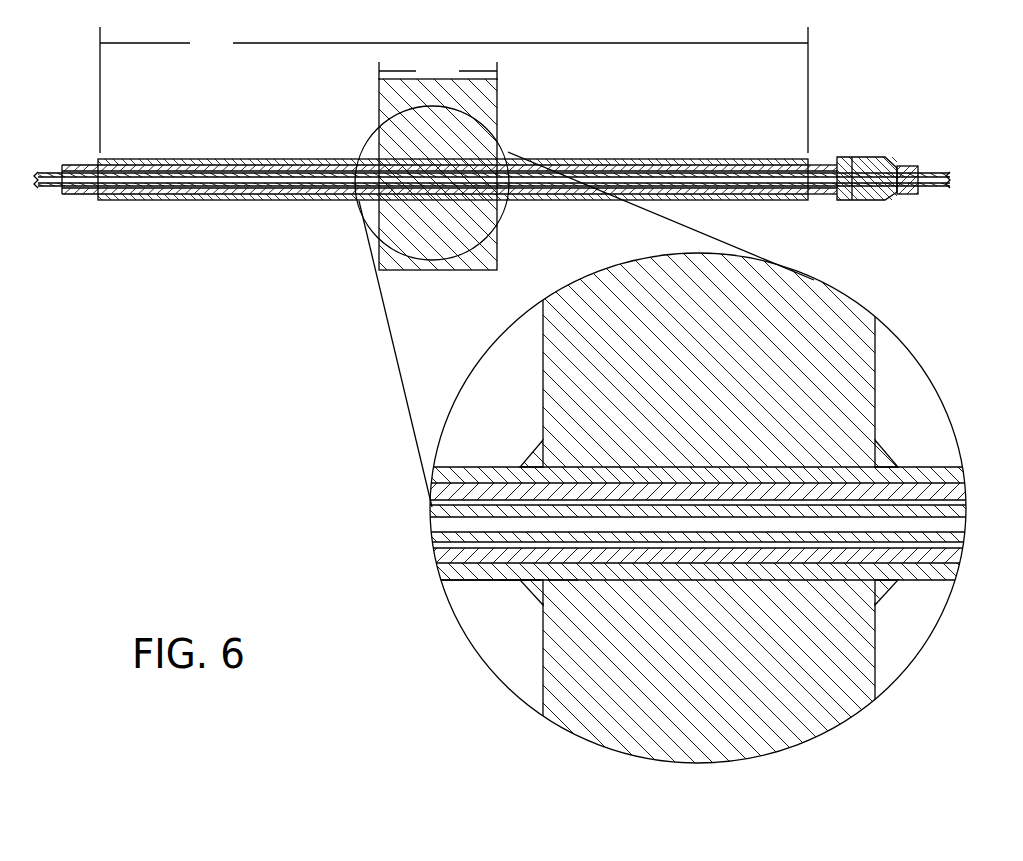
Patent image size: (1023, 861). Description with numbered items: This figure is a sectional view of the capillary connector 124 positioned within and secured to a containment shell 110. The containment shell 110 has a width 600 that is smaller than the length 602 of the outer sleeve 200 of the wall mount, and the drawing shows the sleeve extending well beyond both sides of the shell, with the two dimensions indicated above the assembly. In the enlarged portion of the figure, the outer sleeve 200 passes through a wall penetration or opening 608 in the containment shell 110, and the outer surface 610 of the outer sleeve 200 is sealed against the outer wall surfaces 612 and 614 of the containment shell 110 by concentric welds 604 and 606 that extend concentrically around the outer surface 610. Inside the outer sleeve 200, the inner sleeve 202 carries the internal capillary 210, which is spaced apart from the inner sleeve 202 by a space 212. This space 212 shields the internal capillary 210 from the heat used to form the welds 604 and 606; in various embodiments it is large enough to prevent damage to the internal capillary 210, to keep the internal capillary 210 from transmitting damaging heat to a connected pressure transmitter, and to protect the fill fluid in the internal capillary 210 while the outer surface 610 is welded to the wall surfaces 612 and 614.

The length of outer sleeve 602 is at (454, 90).
The width of containment shell 600 is at (438, 64).
The containment shell 110 is at (497, 92).
The capillary connector 124 is at (824, 91).
The outer sleeve 200 is at (115, 202).
The concentric weld 604 is at (530, 455).
The concentric weld 606 is at (888, 458).
The internal capillary 210 is at (437, 522).
The inner sleeve 202 is at (440, 557).
The space 212 is at (463, 577).
The outer surface of outer sleeve 610 is at (511, 592).
The wall penetration or opening 608 is at (562, 593).
The outer wall surface 612 is at (536, 681).
The outer wall surface 614 is at (882, 668).